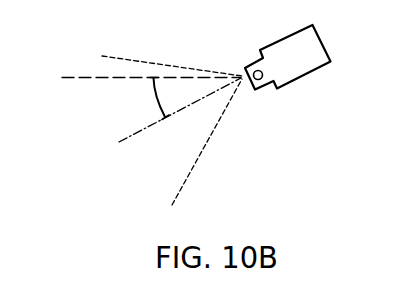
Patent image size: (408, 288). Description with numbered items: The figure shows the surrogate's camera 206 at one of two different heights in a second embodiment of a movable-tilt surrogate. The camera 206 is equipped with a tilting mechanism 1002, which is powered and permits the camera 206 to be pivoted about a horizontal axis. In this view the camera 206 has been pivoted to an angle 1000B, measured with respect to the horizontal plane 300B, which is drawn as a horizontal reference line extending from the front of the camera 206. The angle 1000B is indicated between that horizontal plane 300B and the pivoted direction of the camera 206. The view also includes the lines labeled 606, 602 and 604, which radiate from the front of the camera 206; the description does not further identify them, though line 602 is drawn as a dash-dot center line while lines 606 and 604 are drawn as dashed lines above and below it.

The horizontal plane 300B is at (89, 77).
The upper boundary line of field of view 606 is at (167, 64).
The central optical axis (dash-dot line) 602 is at (123, 141).
The lower boundary line of field of view 604 is at (190, 175).
The angle 1000B is at (155, 105).
The surrogate's camera 206 is at (302, 68).
The tilting mechanism 1002 is at (260, 81).